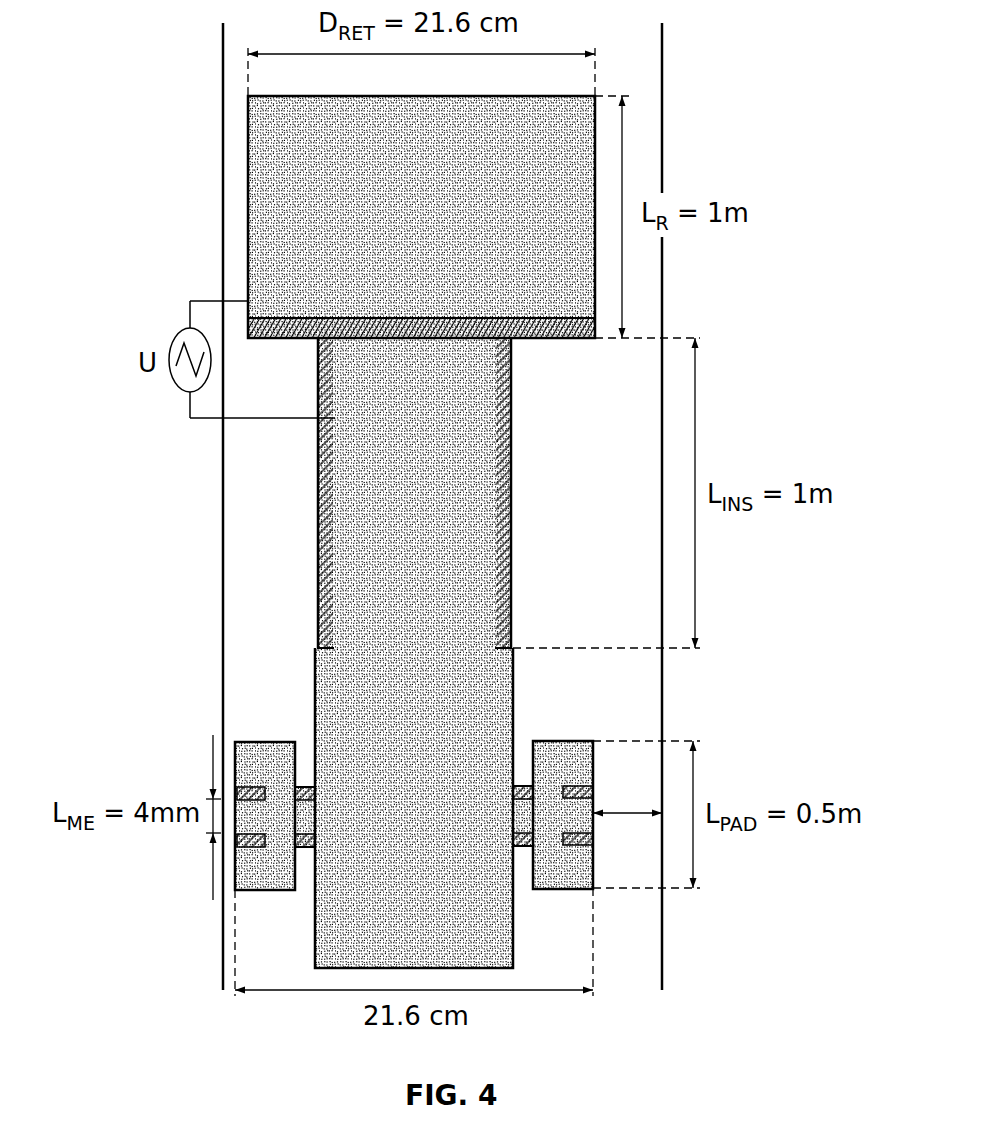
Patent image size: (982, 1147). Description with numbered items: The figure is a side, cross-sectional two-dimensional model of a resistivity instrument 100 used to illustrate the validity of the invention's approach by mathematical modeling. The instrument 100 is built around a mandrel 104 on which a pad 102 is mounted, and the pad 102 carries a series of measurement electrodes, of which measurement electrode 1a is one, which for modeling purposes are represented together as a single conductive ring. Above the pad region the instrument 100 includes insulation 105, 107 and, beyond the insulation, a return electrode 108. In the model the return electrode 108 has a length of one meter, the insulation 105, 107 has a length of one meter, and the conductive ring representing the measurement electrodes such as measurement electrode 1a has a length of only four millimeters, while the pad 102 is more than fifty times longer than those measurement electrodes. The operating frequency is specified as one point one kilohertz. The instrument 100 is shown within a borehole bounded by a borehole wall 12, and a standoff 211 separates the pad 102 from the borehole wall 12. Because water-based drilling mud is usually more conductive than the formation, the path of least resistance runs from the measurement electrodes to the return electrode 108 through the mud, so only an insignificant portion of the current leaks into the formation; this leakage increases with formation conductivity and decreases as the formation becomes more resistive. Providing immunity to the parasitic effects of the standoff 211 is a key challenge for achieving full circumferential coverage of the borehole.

The borehole wall 12 is at (662, 100).
The resistivity instrument 100 is at (403, 532).
The return electrode 108 is at (384, 244).
The insulation 107 is at (537, 340).
The insulation 105 is at (318, 545).
The mandrel 104 is at (512, 690).
The pad 102 is at (200, 790).
The measurement electrode 1a is at (235, 815).
The standoff 211 is at (628, 815).